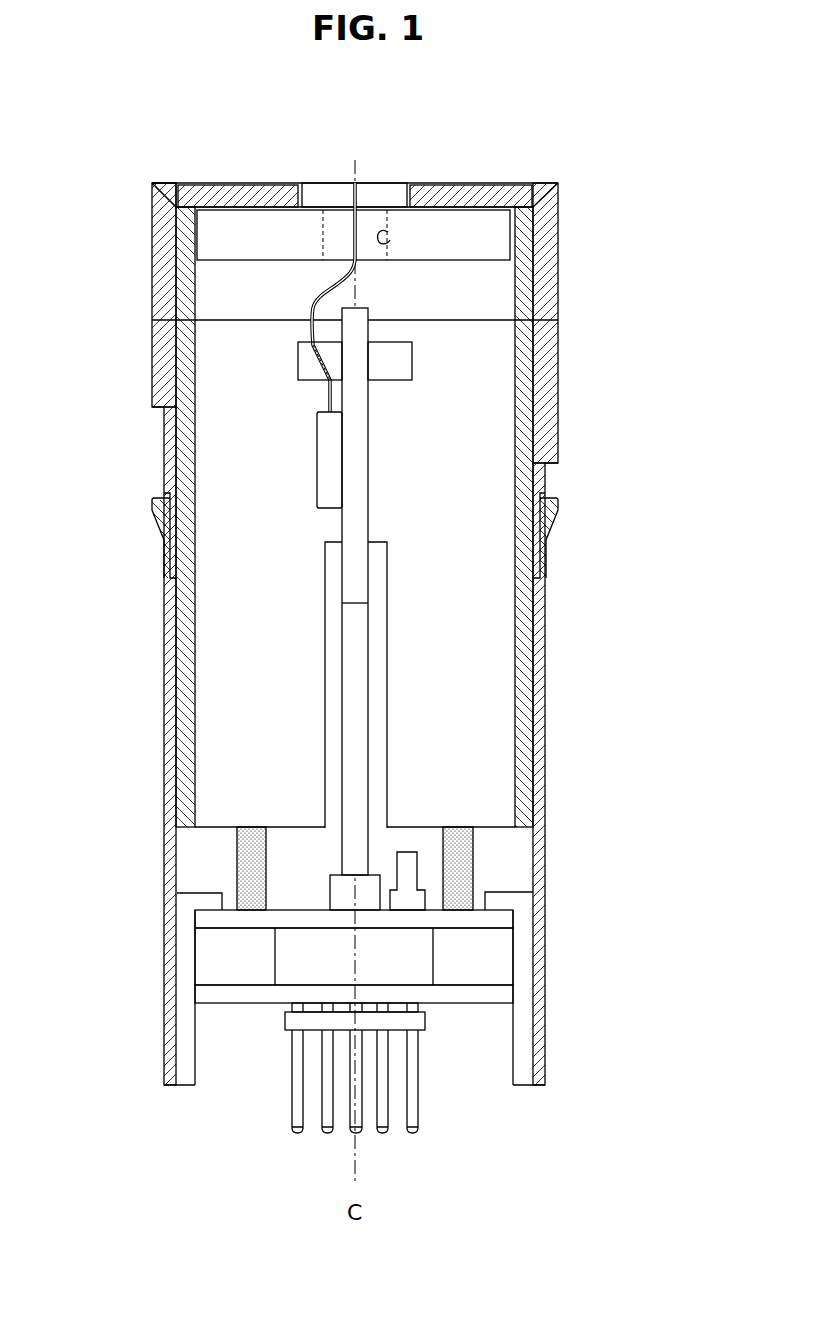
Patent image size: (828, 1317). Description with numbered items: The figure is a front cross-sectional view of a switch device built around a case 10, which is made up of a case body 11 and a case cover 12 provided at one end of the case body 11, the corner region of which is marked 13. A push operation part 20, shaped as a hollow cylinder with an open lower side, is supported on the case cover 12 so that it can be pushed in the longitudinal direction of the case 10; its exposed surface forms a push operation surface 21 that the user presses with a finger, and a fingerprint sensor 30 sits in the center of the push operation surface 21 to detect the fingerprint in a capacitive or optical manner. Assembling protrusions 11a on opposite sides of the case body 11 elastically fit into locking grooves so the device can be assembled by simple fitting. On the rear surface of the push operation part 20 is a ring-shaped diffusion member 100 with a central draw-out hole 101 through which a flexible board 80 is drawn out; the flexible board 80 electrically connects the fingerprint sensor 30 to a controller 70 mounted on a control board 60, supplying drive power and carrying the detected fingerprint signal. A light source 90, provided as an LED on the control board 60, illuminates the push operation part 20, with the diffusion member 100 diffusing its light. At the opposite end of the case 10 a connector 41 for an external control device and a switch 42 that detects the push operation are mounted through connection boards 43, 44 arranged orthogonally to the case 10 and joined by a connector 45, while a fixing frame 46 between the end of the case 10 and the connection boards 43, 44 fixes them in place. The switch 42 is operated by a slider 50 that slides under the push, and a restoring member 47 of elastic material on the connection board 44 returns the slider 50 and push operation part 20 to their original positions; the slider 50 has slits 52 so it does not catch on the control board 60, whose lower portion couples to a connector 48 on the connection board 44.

The case 10 is at (640, 273).
The case body 11 is at (558, 393).
The assembling protrusions 11a is at (155, 505).
The case cover 12 is at (558, 278).
The cap corner 13 is at (180, 183).
The push operation part 20 is at (256, 178).
The push operation surface 21 is at (444, 188).
The fingerprint sensor 30 is at (326, 183).
The diffusion member 100 is at (450, 250).
The draw-out hole 101 is at (390, 240).
The flexible board 80 is at (322, 295).
The light source 90 is at (298, 358).
The controller 70 is at (317, 457).
The control board 60 is at (372, 478).
The slits 52 is at (375, 668).
The slider 50 is at (172, 656).
The restoring member 47 is at (240, 850).
The connector 48 is at (332, 890).
The switch 42 is at (412, 862).
The connection board 44 is at (200, 920).
The connector 45 is at (410, 960).
The connection board 43 is at (221, 1000).
The connector 41 is at (418, 1020).
The fixing frame 46 is at (523, 1048).